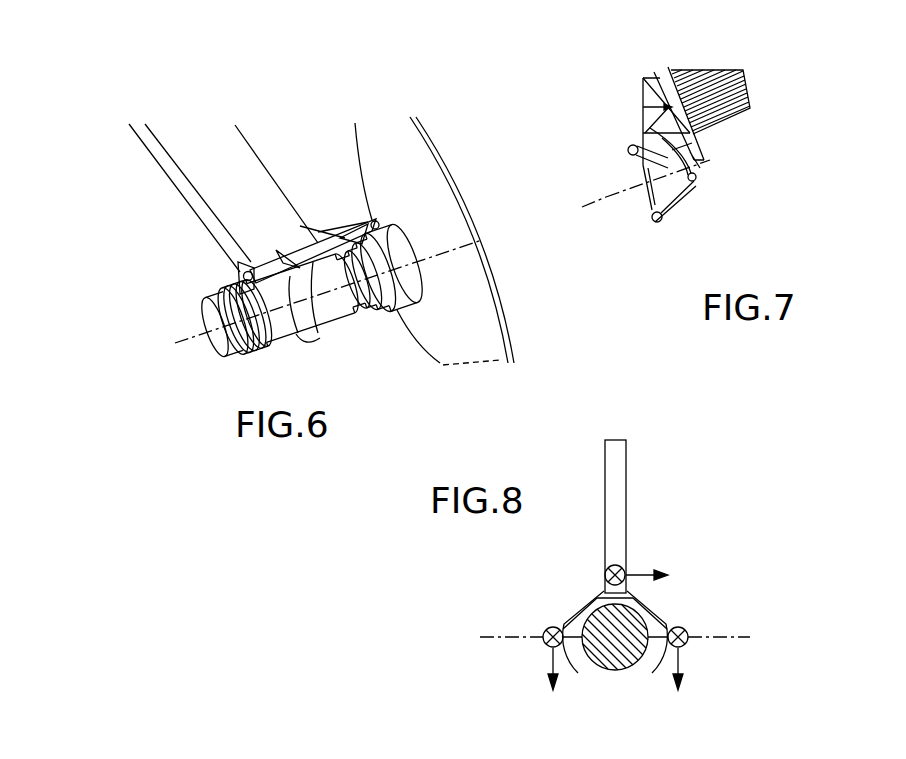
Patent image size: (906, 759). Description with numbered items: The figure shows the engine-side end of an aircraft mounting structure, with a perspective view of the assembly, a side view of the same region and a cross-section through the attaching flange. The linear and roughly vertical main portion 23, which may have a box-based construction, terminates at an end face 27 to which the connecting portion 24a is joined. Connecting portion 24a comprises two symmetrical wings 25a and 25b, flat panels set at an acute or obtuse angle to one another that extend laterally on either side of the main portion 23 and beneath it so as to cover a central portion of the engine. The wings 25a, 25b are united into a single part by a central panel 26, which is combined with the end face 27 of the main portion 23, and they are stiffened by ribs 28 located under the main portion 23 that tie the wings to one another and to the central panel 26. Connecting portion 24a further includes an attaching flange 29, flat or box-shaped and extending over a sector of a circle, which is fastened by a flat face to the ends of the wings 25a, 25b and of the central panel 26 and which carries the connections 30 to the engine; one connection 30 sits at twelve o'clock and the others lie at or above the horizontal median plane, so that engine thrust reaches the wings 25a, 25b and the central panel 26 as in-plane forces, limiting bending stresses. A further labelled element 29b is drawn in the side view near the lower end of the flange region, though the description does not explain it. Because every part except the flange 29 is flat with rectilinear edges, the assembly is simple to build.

In FIG. 6, the main portion 23 is at (177, 148).
In FIG. 7, the main portion 23 is at (712, 70).
In FIG. 6, the connecting portion 24a is at (208, 280).
In FIG. 7, the connecting portion 24a is at (637, 68).
In FIG. 6, the first wing 25a is at (348, 227).
In FIG. 7, the first wing 25a is at (636, 128).
In FIG. 8, the first wing 25a is at (572, 613).
In FIG. 8, the second wing 25b is at (660, 613).
In FIG. 7, the central panel 26 is at (697, 188).
In FIG. 8, the central panel 26 is at (633, 582).
In FIG. 7, the end face 27 is at (690, 143).
In FIG. 6, the ribs 28 is at (337, 278).
In FIG. 7, the ribs 28 is at (658, 172).
In FIG. 7, the attaching flange 29 is at (683, 197).
In FIG. 7, the pivot pin 29b is at (646, 202).
In FIG. 8, the connections 30 is at (611, 567).